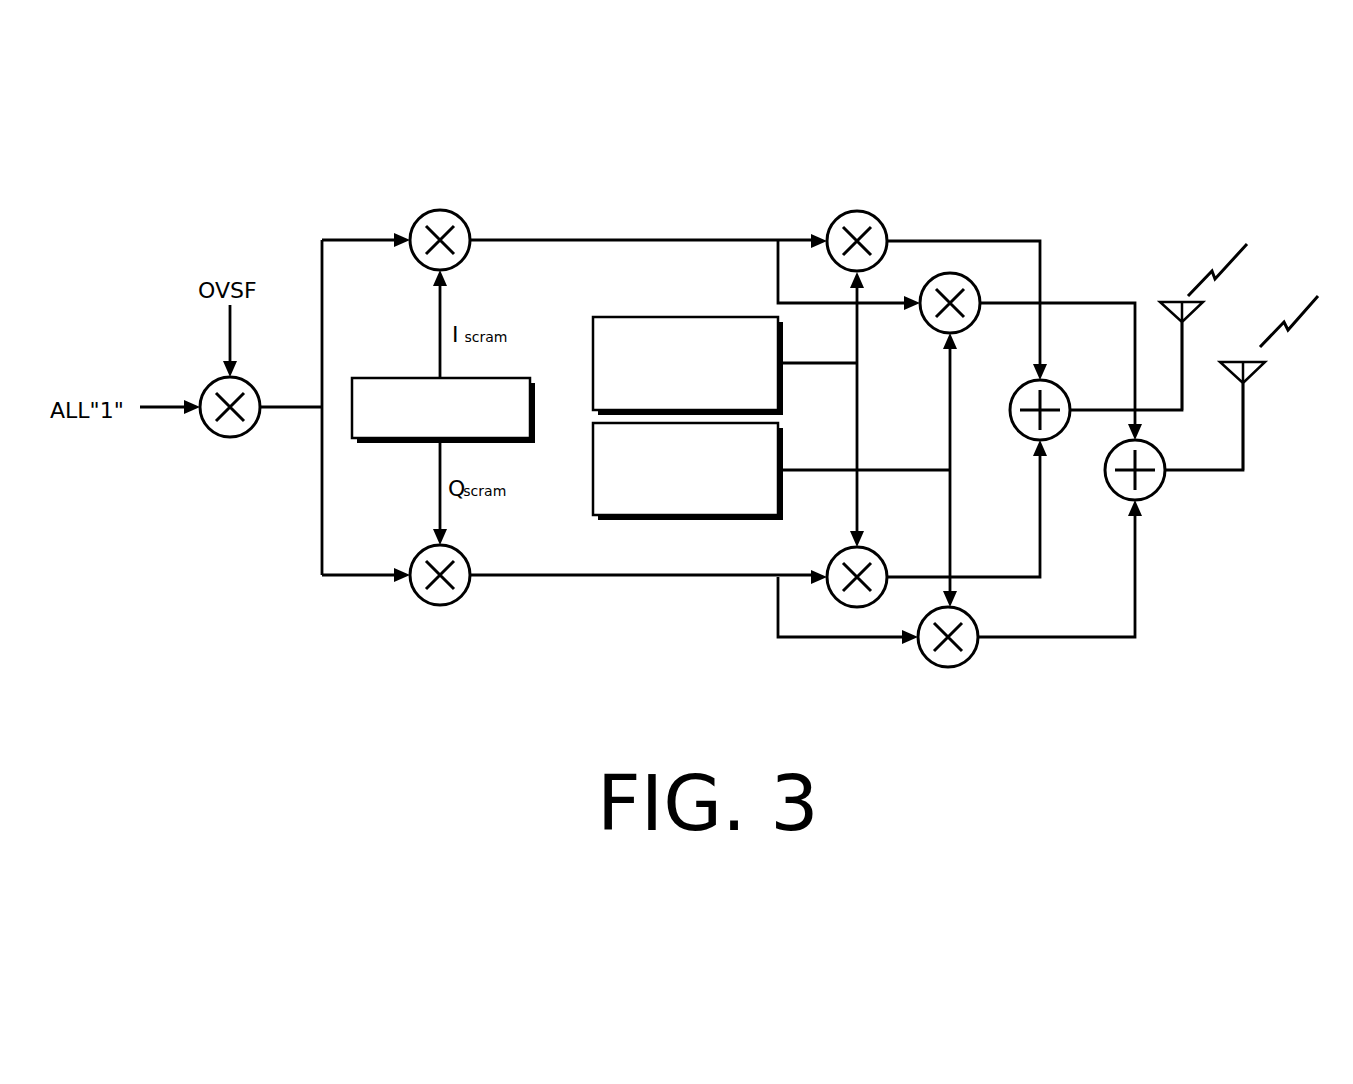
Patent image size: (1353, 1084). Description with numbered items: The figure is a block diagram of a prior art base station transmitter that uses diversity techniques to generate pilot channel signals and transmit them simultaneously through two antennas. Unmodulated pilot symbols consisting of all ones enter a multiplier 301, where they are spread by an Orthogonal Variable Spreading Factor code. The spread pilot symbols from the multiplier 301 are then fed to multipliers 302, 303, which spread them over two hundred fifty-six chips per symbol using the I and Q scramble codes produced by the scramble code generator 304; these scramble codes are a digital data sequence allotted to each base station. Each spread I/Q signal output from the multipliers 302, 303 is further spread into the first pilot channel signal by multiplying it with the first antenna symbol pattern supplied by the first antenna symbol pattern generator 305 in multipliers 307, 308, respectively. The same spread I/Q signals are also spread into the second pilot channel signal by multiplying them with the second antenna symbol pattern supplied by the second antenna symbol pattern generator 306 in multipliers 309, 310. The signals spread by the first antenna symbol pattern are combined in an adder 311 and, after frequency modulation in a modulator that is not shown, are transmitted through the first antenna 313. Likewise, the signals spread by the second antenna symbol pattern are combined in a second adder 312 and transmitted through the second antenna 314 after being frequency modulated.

The multiplier 301 is at (252, 430).
The multiplier 302 is at (462, 218).
The multiplier 303 is at (418, 553).
The scramble code generator 304 is at (384, 374).
The first antenna symbol pattern generator 305 is at (683, 312).
The second antenna symbol pattern generator 306 is at (688, 520).
The multiplier 307 is at (880, 218).
The multiplier 308 is at (878, 555).
The multiplier 309 is at (968, 330).
The multiplier 310 is at (968, 660).
The adder 311 is at (1062, 388).
The second adder 312 is at (1155, 493).
The first antenna 313 is at (1186, 327).
The second antenna 314 is at (1259, 383).